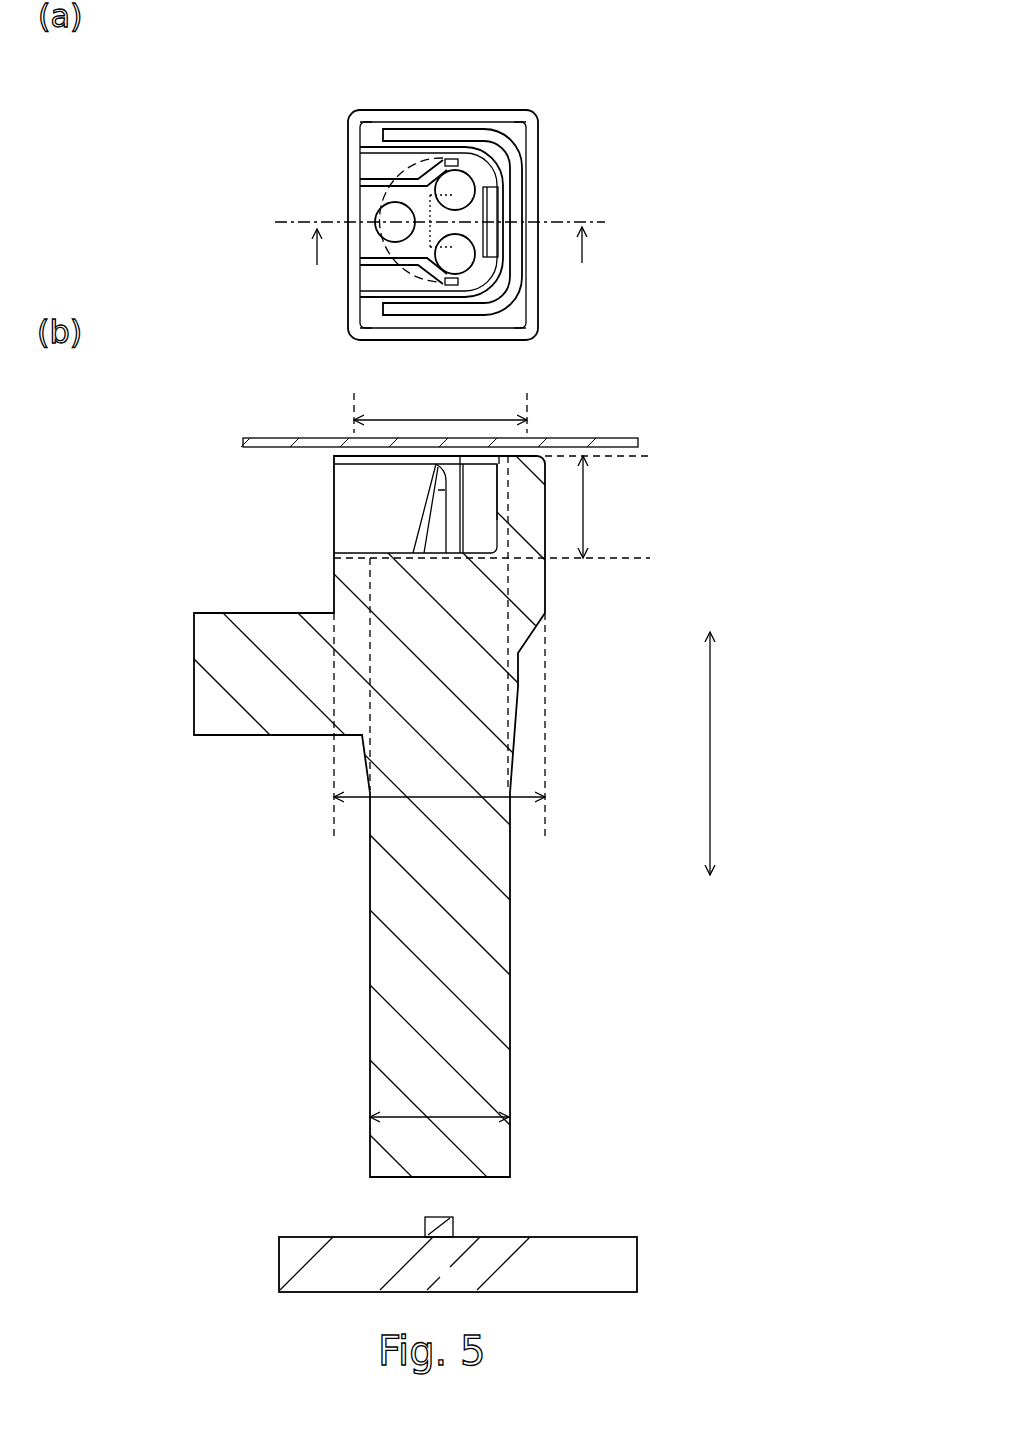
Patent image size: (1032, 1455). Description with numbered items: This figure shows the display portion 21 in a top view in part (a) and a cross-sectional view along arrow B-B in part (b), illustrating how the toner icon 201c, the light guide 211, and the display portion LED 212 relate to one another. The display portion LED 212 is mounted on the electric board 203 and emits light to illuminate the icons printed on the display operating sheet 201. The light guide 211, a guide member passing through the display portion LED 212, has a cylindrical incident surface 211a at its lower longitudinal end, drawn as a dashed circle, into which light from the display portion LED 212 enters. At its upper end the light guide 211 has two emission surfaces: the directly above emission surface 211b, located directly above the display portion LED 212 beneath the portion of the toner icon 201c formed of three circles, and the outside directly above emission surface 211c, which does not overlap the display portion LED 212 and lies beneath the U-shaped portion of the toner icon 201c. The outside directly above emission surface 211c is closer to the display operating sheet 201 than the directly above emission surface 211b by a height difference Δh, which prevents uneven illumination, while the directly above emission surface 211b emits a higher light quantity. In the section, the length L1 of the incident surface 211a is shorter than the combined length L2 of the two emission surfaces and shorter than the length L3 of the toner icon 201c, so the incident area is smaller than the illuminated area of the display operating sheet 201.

The display portion 21 is at (245, 213).
The light guide 211 is at (537, 118).
The incident surface 211a is at (402, 267).
The directly above emission surface 211b is at (347, 198).
The outside directly above emission surface 211c is at (515, 322).
The display operating sheet 201 is at (280, 438).
The toner icon 201c is at (515, 270).
The display portion LED 212 is at (455, 195).
The electric board 203 is at (500, 1280).